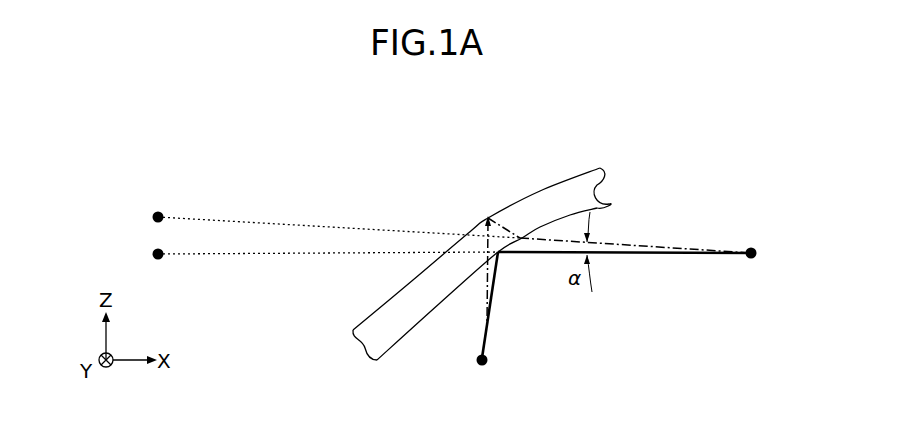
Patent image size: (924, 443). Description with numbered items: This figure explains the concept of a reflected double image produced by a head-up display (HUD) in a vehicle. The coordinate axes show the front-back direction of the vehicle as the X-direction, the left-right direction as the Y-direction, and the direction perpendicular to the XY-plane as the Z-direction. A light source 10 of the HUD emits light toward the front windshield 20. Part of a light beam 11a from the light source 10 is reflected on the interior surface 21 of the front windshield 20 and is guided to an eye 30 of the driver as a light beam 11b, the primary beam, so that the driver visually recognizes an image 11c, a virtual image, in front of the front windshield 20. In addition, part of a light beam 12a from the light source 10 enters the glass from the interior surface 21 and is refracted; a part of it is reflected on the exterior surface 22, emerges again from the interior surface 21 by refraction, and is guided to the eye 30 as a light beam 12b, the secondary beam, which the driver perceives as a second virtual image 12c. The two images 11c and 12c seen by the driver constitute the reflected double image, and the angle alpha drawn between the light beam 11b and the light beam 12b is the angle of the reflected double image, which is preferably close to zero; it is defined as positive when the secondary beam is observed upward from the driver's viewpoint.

The light source 10 is at (476, 362).
The light beam 11a is at (493, 293).
The light beam (primary beam) 11b is at (615, 254).
The image (virtual image) 11c is at (154, 250).
The light beam 12a is at (486, 287).
The light beam (secondary beam) 12b is at (627, 241).
The image (virtual image) 12c is at (154, 213).
The front windshield 20 is at (603, 175).
The interior surface 21 is at (613, 202).
The exterior surface 22 is at (540, 191).
The eye 30 is at (753, 248).